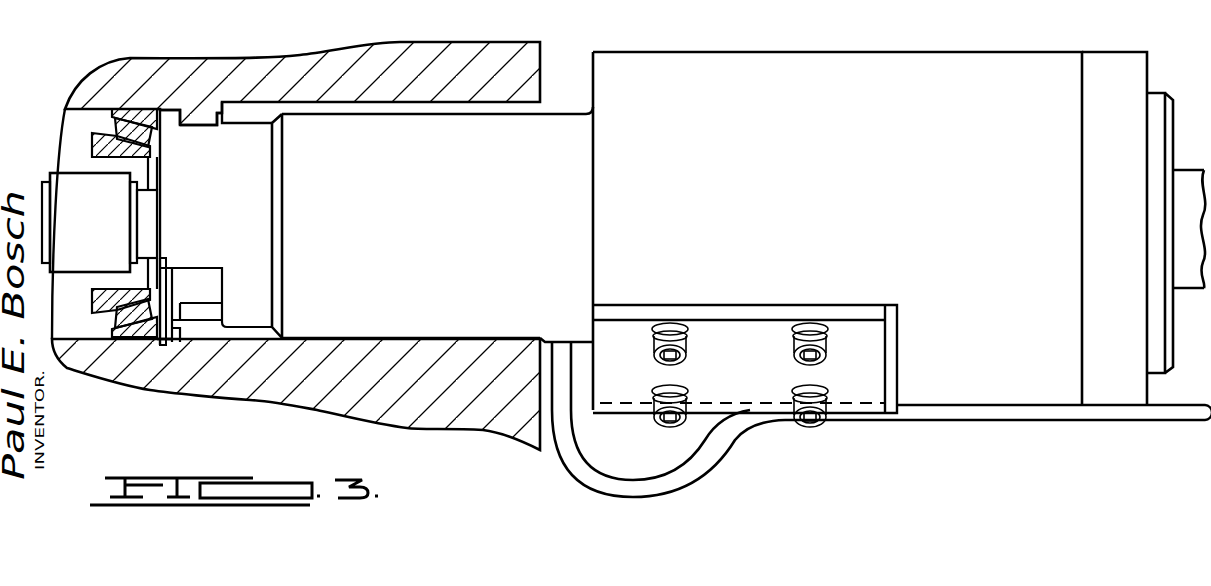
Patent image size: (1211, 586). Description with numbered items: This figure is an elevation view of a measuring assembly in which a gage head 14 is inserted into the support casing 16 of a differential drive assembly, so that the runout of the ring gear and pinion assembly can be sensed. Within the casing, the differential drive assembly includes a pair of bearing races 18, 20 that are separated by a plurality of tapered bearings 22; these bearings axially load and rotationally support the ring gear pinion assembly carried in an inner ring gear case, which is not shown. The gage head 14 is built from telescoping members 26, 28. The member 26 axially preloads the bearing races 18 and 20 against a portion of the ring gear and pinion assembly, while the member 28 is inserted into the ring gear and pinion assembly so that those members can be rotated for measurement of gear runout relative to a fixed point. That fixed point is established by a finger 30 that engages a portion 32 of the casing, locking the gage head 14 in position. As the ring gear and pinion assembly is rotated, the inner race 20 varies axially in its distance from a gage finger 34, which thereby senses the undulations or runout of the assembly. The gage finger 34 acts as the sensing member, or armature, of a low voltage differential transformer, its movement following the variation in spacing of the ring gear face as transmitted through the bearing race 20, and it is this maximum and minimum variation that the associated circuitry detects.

The gage head 14 is at (823, 187).
The support casing 16 is at (217, 72).
The bearing race 18 is at (132, 110).
The inner bearing race 20 is at (90, 142).
The tapered bearings 22 is at (113, 128).
The telescoping member 26 is at (257, 140).
The telescoping member 28 is at (62, 190).
The finger 30 is at (165, 347).
The portion of the casing 32 is at (197, 338).
The gage finger 34 is at (195, 308).